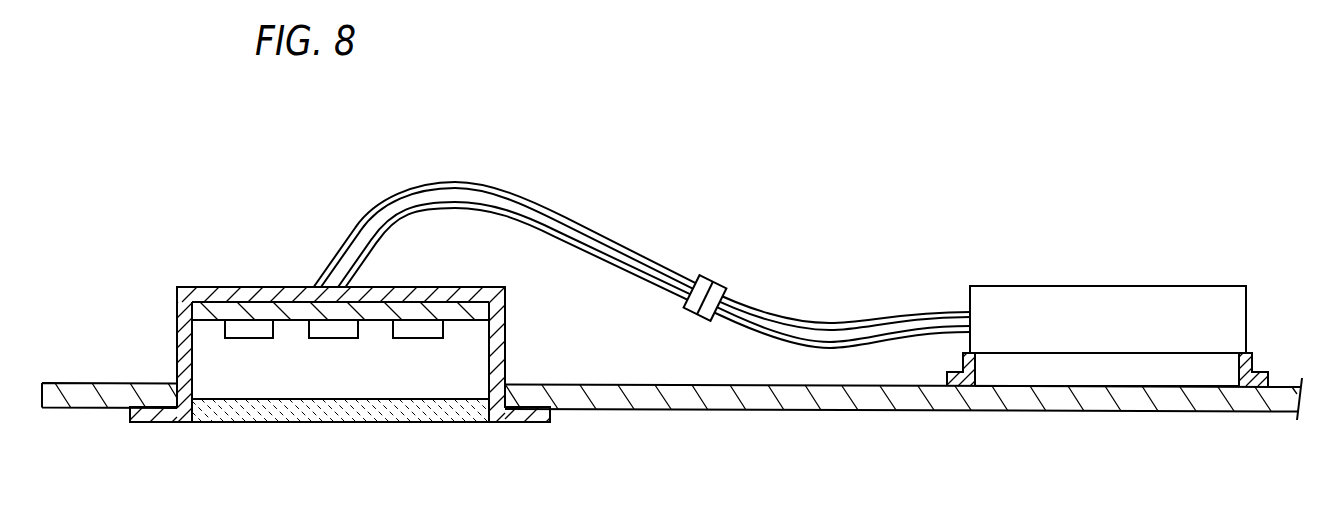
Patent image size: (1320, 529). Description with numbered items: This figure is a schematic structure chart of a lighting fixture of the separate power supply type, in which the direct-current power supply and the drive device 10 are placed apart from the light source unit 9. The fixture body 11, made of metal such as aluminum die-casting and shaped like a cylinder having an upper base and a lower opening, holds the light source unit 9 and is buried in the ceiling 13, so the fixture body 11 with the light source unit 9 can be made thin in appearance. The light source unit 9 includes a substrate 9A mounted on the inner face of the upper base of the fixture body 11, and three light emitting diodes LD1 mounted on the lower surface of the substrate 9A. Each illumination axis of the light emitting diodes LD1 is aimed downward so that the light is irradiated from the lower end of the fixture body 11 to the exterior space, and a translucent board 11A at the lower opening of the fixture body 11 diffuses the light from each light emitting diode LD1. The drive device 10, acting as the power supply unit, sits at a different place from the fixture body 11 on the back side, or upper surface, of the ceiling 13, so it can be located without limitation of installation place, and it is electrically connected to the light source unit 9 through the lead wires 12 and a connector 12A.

The light source unit 9 is at (339, 371).
The substrate 9A is at (286, 310).
The drive device 10 is at (1107, 298).
The fixture body 11 is at (183, 340).
The translucent board 11A is at (268, 413).
The lead wires 12 is at (612, 240).
The connector 12A is at (720, 287).
The ceiling 13 is at (833, 400).
The light emitting diode LD1 is at (334, 353).